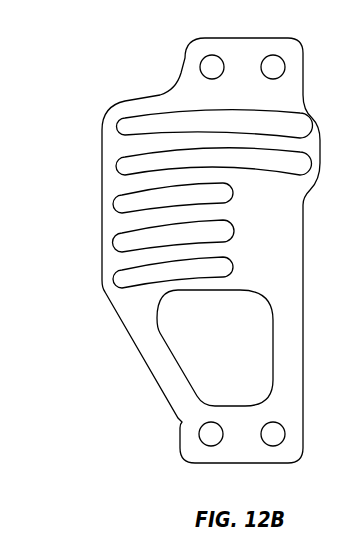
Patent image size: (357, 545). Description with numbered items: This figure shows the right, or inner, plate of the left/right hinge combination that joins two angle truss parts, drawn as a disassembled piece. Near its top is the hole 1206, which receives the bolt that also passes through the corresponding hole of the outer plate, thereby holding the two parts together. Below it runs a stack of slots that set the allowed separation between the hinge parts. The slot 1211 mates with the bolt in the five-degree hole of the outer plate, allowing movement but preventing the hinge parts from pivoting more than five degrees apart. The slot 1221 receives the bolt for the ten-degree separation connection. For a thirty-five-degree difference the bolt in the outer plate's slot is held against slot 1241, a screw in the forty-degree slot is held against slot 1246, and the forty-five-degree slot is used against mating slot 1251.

The hole 1206 is at (208, 66).
The slot 1211 is at (127, 128).
The slot 1221 is at (127, 165).
The slot 1241 is at (127, 203).
The slot 1246 is at (127, 242).
The slot 1251 is at (128, 279).